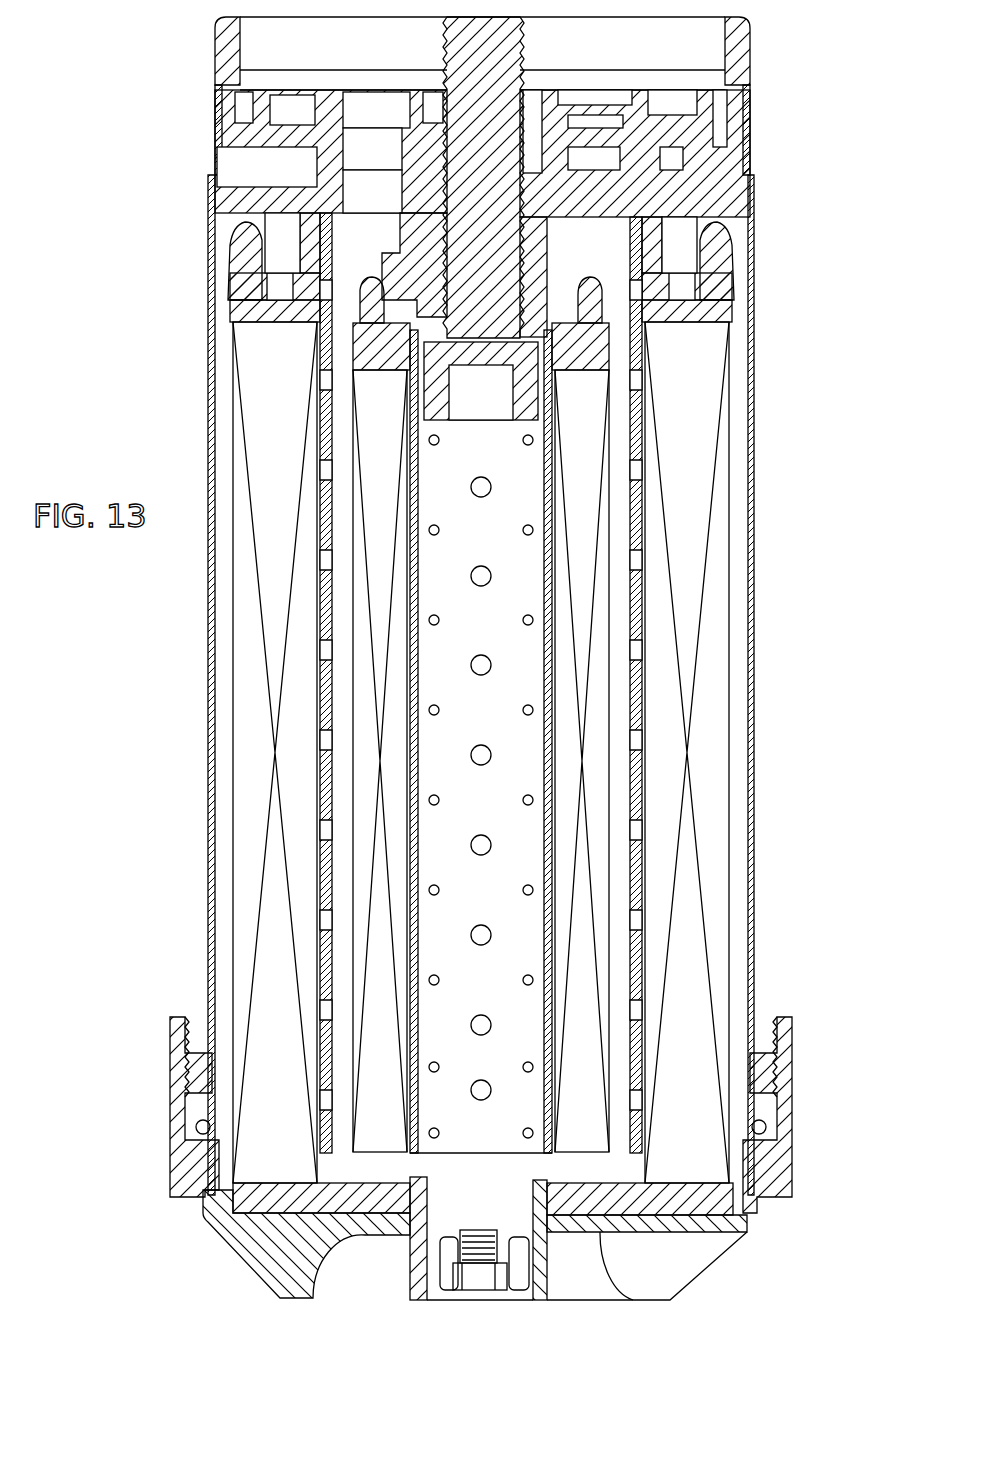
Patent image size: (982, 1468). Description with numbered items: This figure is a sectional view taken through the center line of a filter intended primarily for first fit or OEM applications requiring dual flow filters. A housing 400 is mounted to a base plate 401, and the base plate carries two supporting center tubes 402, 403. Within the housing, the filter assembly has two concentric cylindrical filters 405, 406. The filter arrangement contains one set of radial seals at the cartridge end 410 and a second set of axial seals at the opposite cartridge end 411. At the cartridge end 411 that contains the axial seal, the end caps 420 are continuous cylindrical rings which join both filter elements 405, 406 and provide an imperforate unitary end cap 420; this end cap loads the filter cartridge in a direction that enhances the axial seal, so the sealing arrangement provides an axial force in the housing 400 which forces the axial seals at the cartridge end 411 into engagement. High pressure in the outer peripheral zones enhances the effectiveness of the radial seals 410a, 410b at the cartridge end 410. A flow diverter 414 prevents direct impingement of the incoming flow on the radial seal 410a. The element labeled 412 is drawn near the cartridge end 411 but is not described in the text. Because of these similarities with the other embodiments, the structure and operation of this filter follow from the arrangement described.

The housing 400 is at (755, 537).
The base plate 401 is at (706, 190).
The supporting center tube 402 is at (322, 530).
The supporting center tube 403 is at (528, 800).
The cylindrical filter 405 is at (243, 835).
The cylindrical filter 406 is at (598, 1047).
The cartridge end 410 is at (767, 262).
The radial seal 410a is at (733, 250).
The radial seal 410b is at (360, 300).
The cartridge end 411 is at (812, 1117).
The seal ring 412 is at (762, 1182).
The flow diverter 414 is at (246, 192).
The end cap 420 is at (272, 1200).